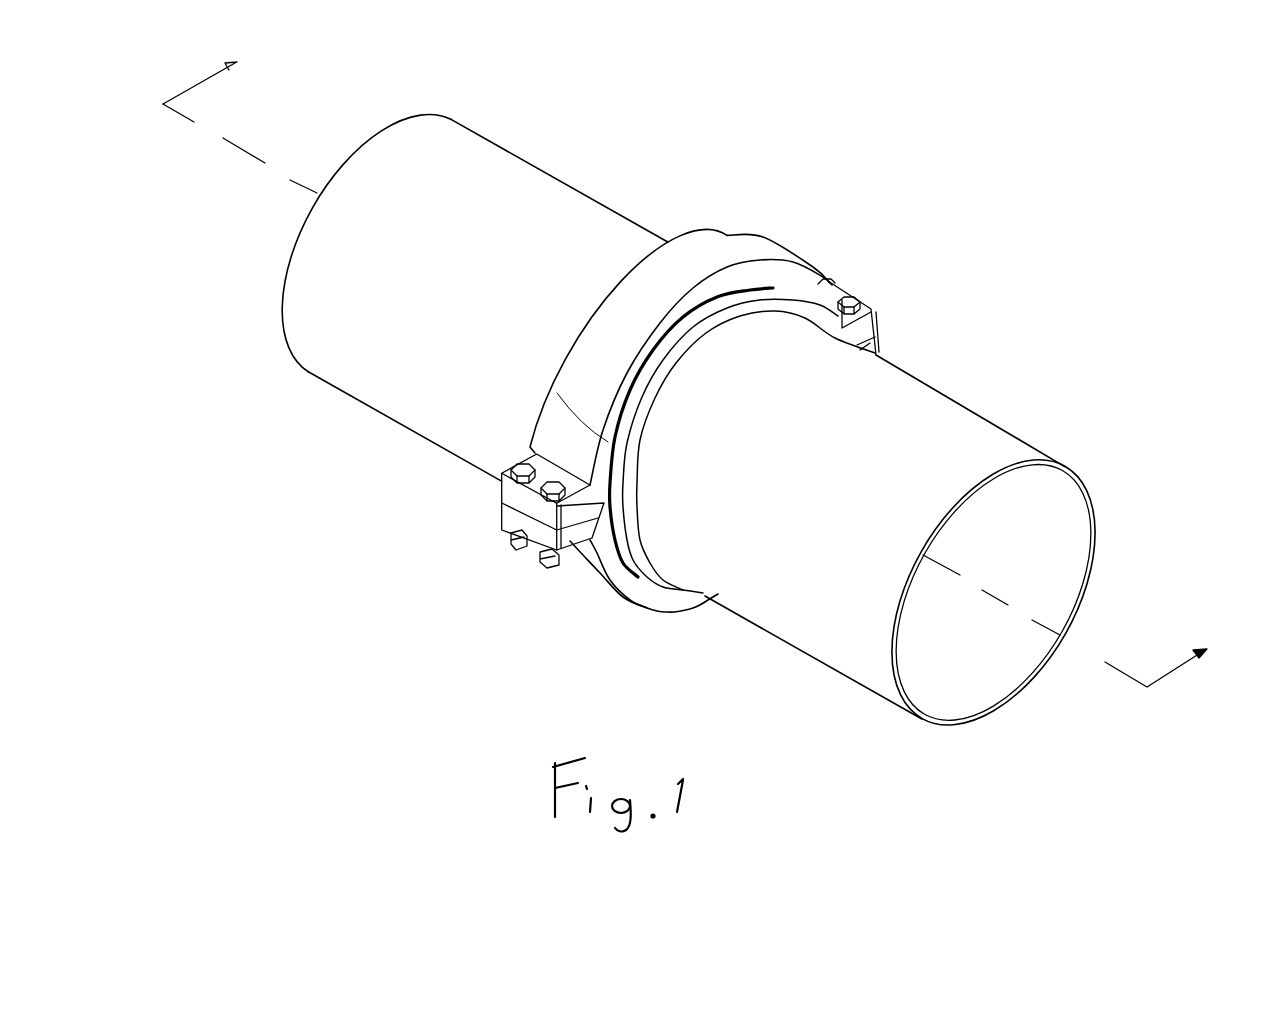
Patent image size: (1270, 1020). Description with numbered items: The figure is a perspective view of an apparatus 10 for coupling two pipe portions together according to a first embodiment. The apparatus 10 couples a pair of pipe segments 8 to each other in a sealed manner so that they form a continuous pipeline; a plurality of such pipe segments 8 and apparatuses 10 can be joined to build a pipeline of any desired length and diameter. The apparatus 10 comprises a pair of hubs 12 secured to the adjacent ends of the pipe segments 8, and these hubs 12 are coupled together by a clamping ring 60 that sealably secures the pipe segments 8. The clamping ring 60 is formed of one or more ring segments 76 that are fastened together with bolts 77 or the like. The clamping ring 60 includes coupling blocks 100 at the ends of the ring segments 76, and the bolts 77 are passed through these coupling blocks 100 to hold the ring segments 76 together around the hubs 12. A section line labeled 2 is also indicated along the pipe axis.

The section line 2- 2 is at (697, 368).
The pipe segments 8 is at (487, 177).
The apparatus 10 is at (664, 388).
The hubs 12 is at (775, 291).
The clamping ring 60 is at (748, 235).
The ring segments 76 is at (681, 250).
The bolts 77 is at (545, 558).
The coupling blocks 100 is at (502, 485).